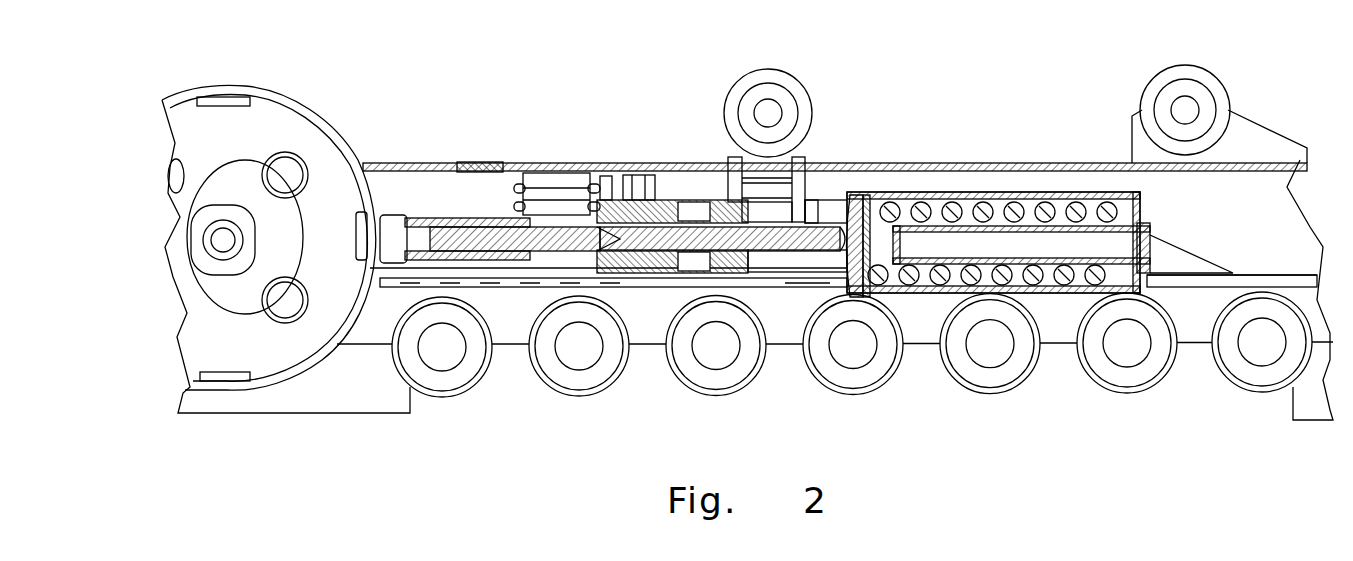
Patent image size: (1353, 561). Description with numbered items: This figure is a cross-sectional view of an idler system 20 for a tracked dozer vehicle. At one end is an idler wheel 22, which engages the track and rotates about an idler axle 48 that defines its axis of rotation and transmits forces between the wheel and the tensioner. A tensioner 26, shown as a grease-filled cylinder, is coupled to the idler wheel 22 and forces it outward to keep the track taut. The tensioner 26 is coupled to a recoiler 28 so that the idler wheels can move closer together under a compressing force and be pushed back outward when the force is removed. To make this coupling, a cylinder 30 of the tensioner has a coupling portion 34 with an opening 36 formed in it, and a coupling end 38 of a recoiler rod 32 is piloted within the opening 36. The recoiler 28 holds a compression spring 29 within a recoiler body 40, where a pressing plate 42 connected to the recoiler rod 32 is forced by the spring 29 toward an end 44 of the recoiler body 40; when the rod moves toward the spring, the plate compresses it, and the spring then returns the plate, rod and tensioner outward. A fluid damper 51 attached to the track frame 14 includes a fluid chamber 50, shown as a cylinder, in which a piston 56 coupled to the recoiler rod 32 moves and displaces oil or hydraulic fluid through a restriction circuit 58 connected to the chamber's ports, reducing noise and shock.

The idler system 20 is at (887, 98).
The idler wheel 22 is at (288, 137).
The idler axle 48 is at (223, 237).
The tensioner 26 is at (440, 217).
The cylinder 30 is at (477, 217).
The restriction circuit 58 is at (517, 167).
The coupling portion 34 is at (595, 213).
The fluid damper 51 is at (603, 177).
The coupling end 38 is at (662, 200).
The fluid chamber 50 is at (672, 197).
The recoiler rod 32 is at (818, 233).
The end 44 is at (833, 223).
The pressing plate 42 is at (873, 197).
The recoiler body 40 is at (918, 192).
The recoiler 28 is at (986, 168).
The compression spring 29 is at (1020, 192).
The opening 36 is at (628, 280).
The piston 56 is at (652, 273).
The track frame 14 is at (787, 273).